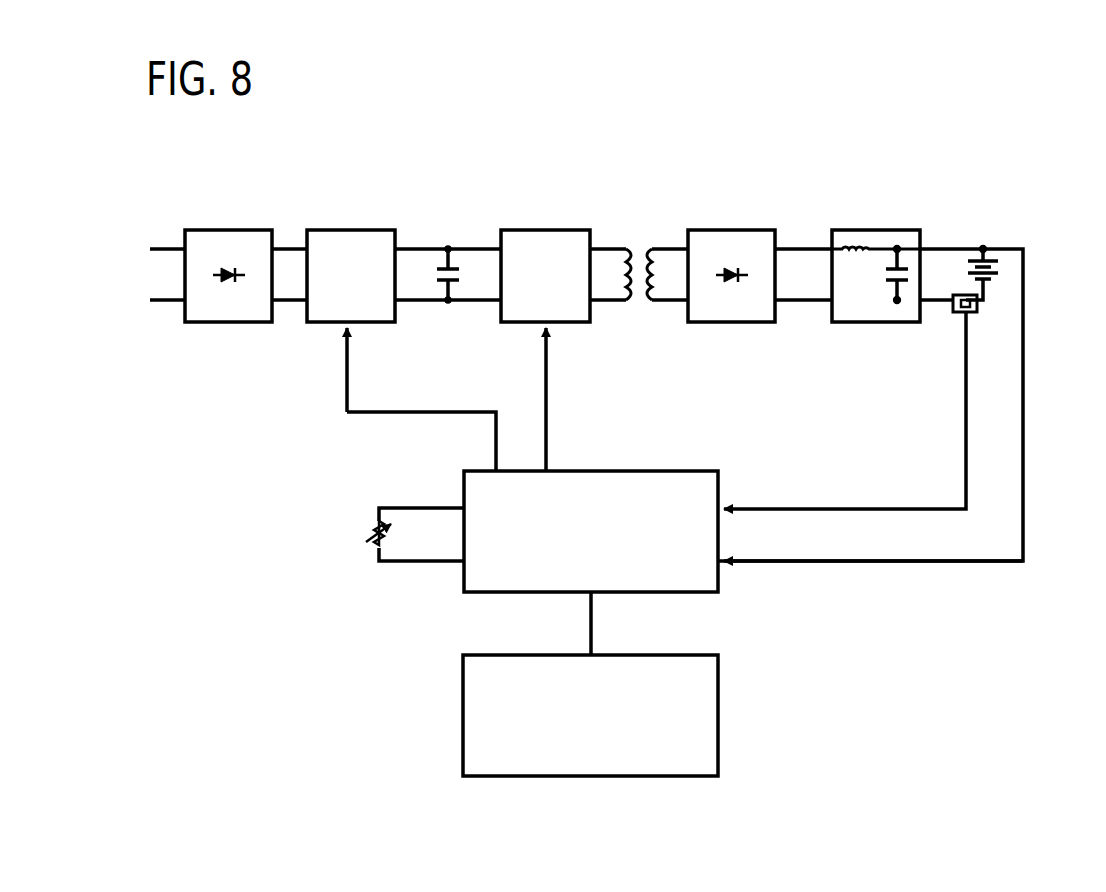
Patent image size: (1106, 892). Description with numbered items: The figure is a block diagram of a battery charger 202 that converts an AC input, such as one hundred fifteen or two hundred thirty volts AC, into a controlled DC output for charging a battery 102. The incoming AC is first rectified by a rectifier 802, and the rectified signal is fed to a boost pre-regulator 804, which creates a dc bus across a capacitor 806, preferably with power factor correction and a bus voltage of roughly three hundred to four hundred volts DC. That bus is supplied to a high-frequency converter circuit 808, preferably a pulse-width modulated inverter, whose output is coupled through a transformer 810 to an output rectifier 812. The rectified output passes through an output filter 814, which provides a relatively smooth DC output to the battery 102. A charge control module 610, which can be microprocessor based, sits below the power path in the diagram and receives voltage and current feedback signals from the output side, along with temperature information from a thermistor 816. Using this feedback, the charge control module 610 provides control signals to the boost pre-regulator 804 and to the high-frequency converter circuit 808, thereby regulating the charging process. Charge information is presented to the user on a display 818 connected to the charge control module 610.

The rectifier 802 is at (227, 231).
The boost pre-regulator 804 is at (342, 231).
The capacitor 806 is at (448, 248).
The high-frequency converter circuit 808 is at (565, 323).
The transformer 810 is at (652, 248).
The output rectifier 812 is at (740, 231).
The output filter 814 is at (876, 231).
The battery 102 is at (998, 272).
The charge control module 610 is at (648, 472).
The thermistor 816 is at (372, 531).
The display 818 is at (718, 716).
The battery charger 202 is at (244, 619).